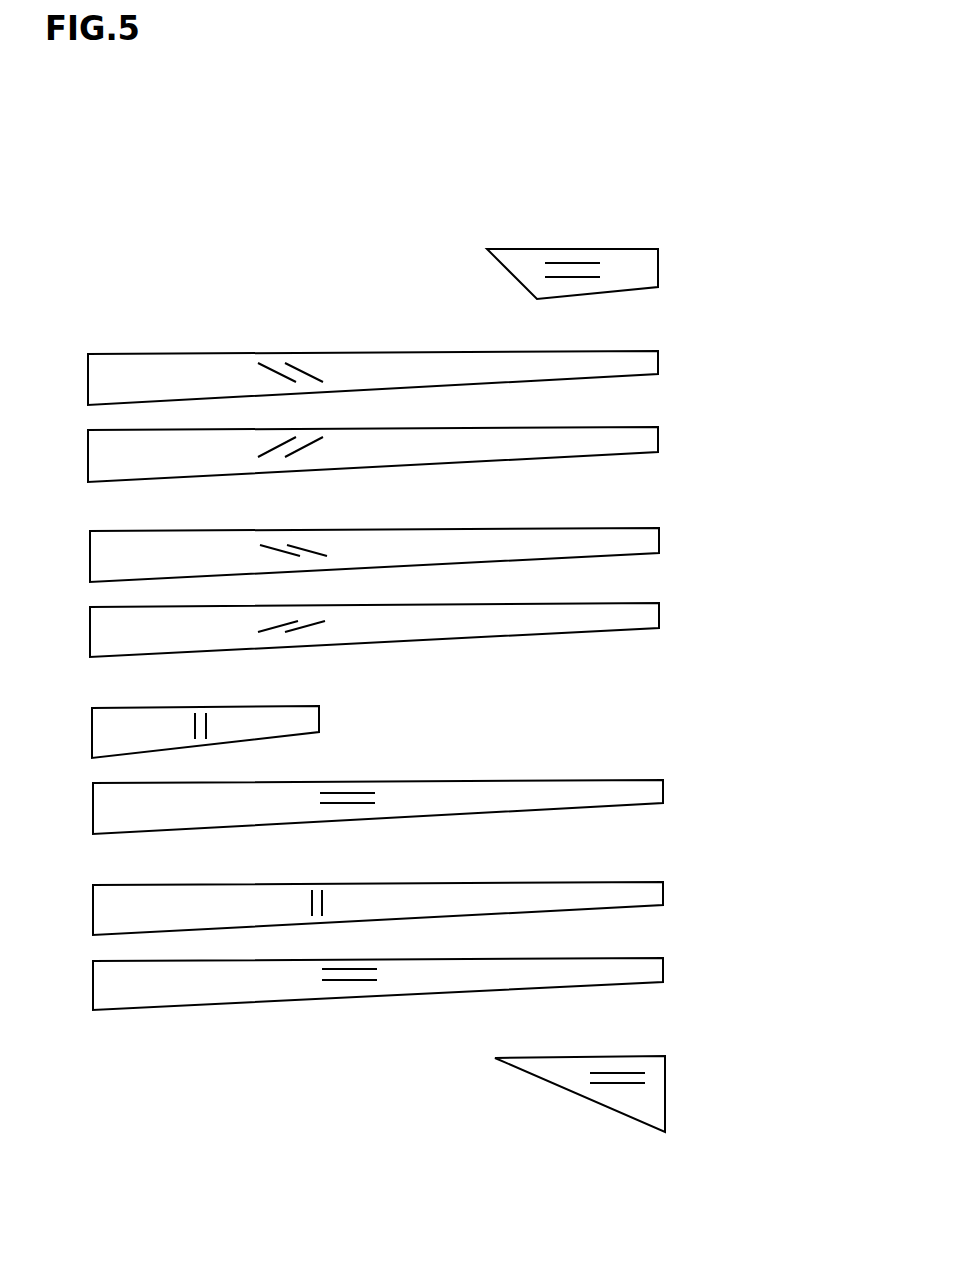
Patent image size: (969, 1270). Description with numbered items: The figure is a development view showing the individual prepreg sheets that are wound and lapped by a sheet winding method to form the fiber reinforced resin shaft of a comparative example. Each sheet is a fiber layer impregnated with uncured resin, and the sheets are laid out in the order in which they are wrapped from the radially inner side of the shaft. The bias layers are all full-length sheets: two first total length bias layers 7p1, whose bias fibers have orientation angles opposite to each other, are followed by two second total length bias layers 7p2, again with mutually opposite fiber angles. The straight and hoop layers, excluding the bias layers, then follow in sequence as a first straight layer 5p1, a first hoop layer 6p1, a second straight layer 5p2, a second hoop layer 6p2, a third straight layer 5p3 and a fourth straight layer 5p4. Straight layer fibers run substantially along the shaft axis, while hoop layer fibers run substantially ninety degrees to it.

The first straight layer 5p1 is at (633, 280).
The second straight layer 5p2 is at (642, 798).
The third straight layer 5p3 is at (645, 977).
The fourth straight layer 5p4 is at (645, 1063).
The first hoop layer 6p1 is at (290, 726).
The second hoop layer 6p2 is at (640, 898).
The first total length bias layer 7p1 is at (612, 360).
The second total length bias layer 7p2 is at (612, 537).